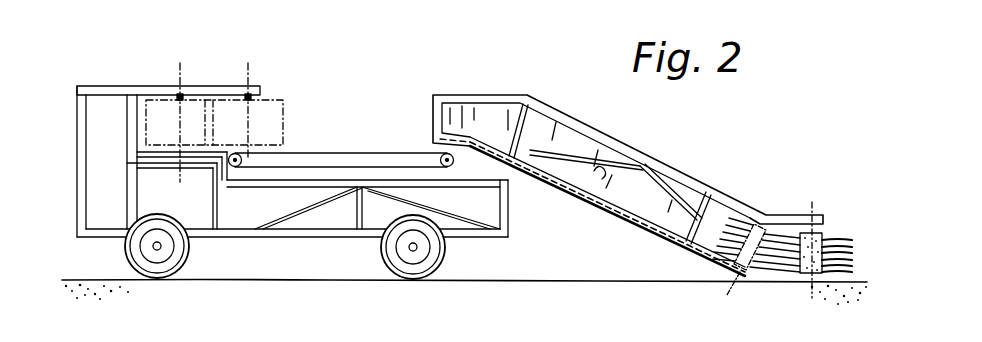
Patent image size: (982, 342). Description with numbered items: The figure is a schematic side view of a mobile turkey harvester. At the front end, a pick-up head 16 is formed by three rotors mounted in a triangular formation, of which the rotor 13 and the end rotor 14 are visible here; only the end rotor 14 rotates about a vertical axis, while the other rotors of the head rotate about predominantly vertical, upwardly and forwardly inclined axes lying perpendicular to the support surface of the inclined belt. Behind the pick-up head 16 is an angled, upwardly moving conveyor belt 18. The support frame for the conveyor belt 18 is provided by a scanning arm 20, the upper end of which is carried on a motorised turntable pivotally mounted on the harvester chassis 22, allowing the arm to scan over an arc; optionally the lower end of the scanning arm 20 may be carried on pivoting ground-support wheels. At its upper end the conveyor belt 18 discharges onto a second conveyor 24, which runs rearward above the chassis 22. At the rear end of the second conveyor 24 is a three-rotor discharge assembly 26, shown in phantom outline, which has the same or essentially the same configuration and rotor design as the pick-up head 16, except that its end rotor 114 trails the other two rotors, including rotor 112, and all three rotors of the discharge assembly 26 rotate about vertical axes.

The rotor 13 is at (748, 211).
The end rotor 14 is at (838, 234).
The pick-up head 16 is at (790, 182).
The conveyor belt 18 is at (582, 210).
The scanning arm 20 is at (577, 88).
The harvester chassis 22 is at (293, 233).
The second conveyor 24 is at (347, 152).
The 3-rotor discharge assembly 26 is at (207, 66).
The rotor 112 is at (273, 112).
The end rotor 114 is at (155, 110).